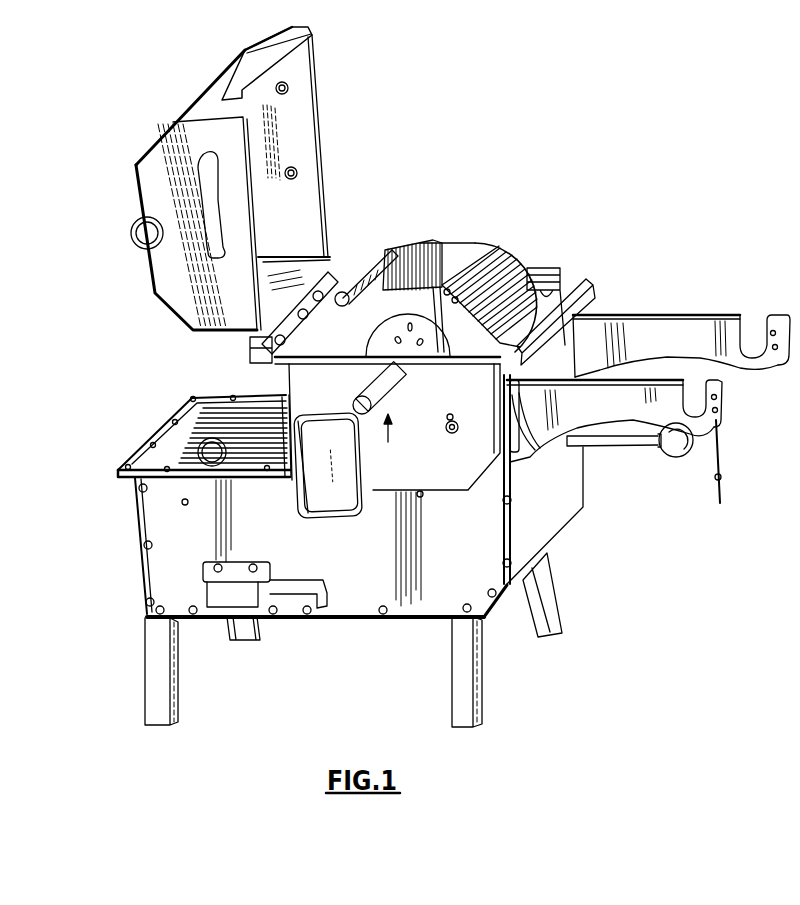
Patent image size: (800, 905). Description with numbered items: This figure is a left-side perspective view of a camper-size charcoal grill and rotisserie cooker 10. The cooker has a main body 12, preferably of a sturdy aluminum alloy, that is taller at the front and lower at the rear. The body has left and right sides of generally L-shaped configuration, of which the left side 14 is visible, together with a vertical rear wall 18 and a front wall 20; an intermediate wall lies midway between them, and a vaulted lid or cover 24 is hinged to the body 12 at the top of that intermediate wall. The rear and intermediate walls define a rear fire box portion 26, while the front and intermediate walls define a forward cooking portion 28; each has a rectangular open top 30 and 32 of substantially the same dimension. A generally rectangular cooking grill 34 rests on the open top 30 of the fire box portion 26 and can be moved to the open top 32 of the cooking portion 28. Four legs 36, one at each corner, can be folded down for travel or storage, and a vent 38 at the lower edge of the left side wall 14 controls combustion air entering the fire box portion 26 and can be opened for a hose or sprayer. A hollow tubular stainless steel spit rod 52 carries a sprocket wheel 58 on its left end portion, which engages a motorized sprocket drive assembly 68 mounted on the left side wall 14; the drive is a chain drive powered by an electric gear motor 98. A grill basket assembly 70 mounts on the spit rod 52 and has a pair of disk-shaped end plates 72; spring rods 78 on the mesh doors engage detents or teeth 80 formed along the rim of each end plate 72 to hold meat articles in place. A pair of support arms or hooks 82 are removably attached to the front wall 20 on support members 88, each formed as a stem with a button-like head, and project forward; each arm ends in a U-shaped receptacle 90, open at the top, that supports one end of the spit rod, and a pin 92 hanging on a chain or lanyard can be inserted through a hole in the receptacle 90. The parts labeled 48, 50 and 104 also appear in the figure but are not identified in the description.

The rotisserie cooker 10 is at (552, 700).
The main body 12 is at (380, 513).
The left side 14 is at (353, 597).
The rear wall 18 is at (460, 656).
The front wall 20 is at (582, 504).
The lid 24 is at (323, 128).
The fire box portion 26 is at (201, 739).
The cooking portion 28 is at (421, 706).
The open top 30 is at (204, 407).
The open top 32 is at (552, 280).
The cooking grill 34 is at (190, 420).
The legs 36 is at (566, 607).
The vent 38 is at (267, 630).
The rod 48 is at (621, 444).
The knob 50 is at (684, 455).
The rotisserie spit rod 52 is at (388, 444).
The sprocket wheel 58 is at (412, 352).
The motorized sprocket drive assembly 68 is at (378, 487).
The grill basket assembly 70 is at (439, 335).
The end plates 72 is at (450, 243).
The spring rod 78 is at (385, 252).
The detents 80 is at (400, 252).
The support arms 82 is at (682, 278).
The support members 88 is at (527, 398).
The U-shaped receptacle 90 is at (758, 310).
The pin 92 is at (727, 484).
The electric gear motor 98 is at (319, 502).
The front plate 104 is at (450, 477).